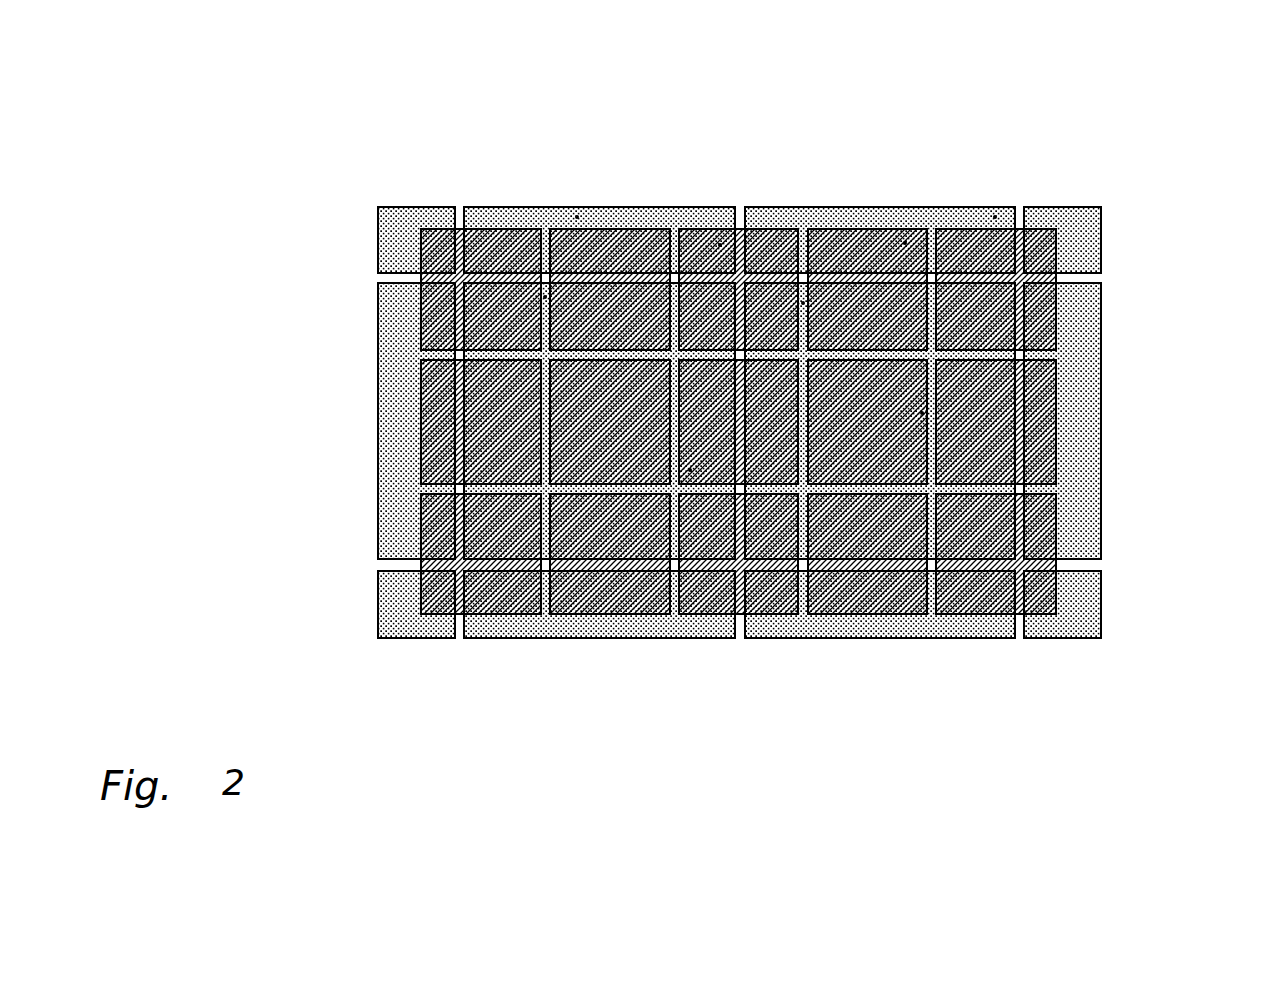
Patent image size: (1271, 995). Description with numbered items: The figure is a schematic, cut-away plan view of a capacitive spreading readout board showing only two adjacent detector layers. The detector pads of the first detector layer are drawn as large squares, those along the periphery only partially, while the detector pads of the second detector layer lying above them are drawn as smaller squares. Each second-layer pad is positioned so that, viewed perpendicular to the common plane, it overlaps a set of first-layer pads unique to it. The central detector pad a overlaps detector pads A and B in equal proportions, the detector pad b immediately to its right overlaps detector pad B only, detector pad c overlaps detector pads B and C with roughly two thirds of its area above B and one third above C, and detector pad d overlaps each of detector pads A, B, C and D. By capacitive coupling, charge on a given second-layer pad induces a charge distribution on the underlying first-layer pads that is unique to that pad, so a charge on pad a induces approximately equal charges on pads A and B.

The detector pad A of the first detector layer A is at (545, 297).
The detector pad B of the first detector layer B is at (803, 303).
The detector pad C of the first detector layer C is at (995, 217).
The detector pad D of the first detector layer D is at (577, 217).
The detector pad a of the second detector layer a is at (690, 470).
The detector pad b of the second detector layer b is at (922, 413).
The detector pad c of the second detector layer c is at (905, 243).
The detector pad d of the second detector layer d is at (720, 245).